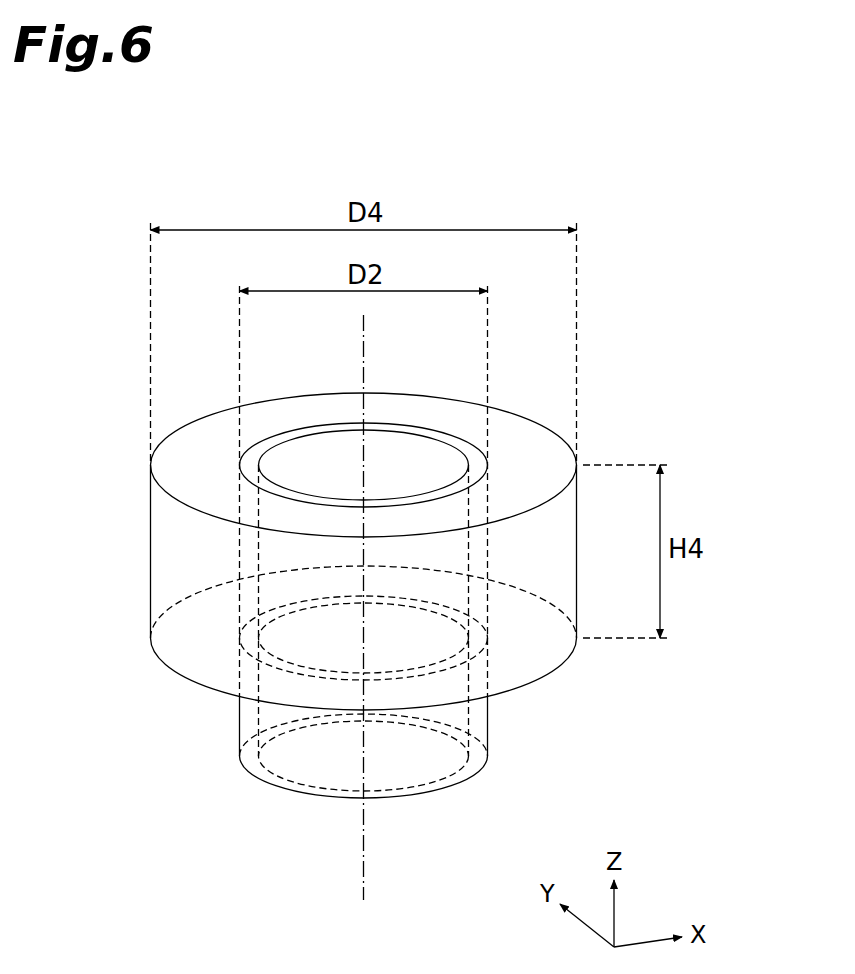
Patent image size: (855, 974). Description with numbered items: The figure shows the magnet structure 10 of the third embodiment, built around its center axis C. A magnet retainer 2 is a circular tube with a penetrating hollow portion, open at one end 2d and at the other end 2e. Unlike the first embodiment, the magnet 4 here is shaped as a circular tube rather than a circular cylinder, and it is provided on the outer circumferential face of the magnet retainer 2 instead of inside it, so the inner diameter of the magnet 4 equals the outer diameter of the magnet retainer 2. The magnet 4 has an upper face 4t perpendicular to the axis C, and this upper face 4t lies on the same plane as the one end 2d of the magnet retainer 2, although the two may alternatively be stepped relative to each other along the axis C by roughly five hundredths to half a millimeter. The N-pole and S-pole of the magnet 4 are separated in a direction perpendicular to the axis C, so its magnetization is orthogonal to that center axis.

The magnet structure 10 is at (600, 340).
The magnet 4 is at (389, 524).
The upper face 4t is at (197, 447).
The magnet retainer 2 is at (398, 546).
The one end 2d is at (441, 435).
The other end 2e is at (463, 779).
The axis C is at (366, 851).